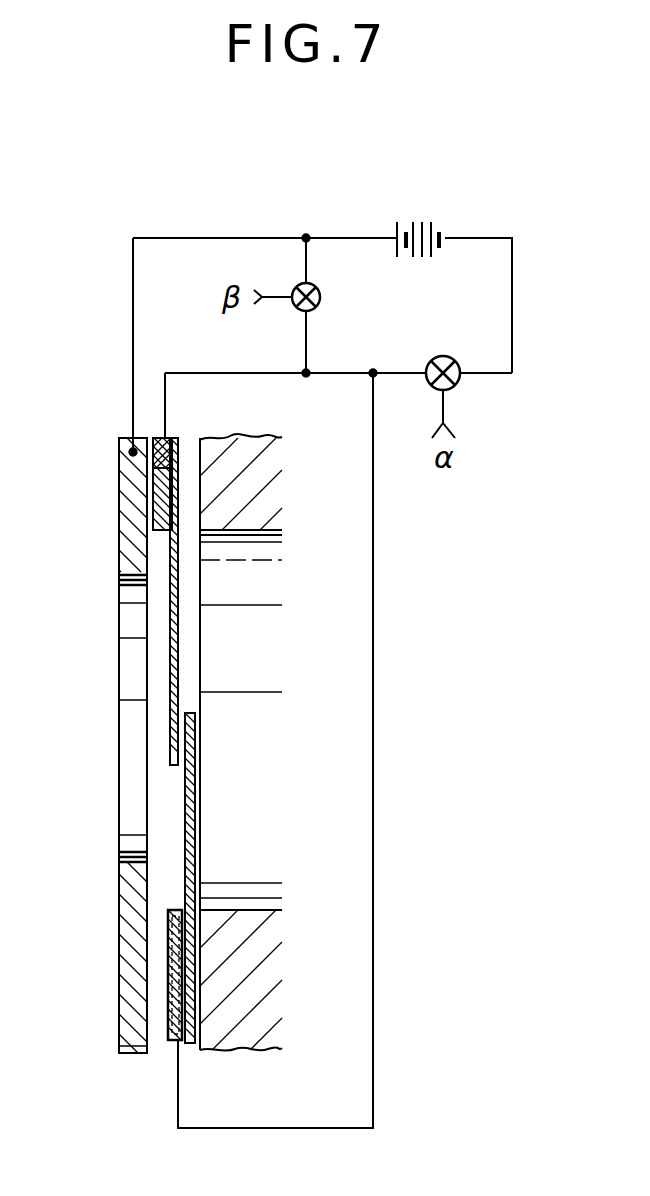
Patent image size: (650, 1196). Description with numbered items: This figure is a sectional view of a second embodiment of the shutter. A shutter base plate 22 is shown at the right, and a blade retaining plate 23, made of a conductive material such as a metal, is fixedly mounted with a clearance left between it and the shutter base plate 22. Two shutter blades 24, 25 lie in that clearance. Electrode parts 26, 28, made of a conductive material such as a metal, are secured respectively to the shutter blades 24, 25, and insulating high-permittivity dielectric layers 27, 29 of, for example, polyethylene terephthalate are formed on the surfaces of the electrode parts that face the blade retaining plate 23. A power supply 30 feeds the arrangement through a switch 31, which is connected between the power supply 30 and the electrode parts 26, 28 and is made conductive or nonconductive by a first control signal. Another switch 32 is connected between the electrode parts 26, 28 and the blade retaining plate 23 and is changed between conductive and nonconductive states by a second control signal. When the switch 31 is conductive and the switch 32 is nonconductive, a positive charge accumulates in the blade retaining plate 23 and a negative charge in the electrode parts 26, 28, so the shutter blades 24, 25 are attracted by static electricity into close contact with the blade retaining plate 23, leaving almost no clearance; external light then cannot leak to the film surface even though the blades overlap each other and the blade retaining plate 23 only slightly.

The shutter base plate 22 is at (245, 997).
The blade retaining plate 23 is at (131, 880).
The shutter blade 24 is at (170, 668).
The shutter blade 25 is at (185, 790).
The electrode part 26 is at (153, 528).
The insulating high-permittivity dielectric layer 27 is at (153, 490).
The electrode part 28 is at (168, 958).
The insulating high-permittivity dielectric layer 29 is at (168, 1000).
The power supply 30 is at (415, 222).
The switch 31 is at (450, 357).
The switch 32 is at (318, 305).